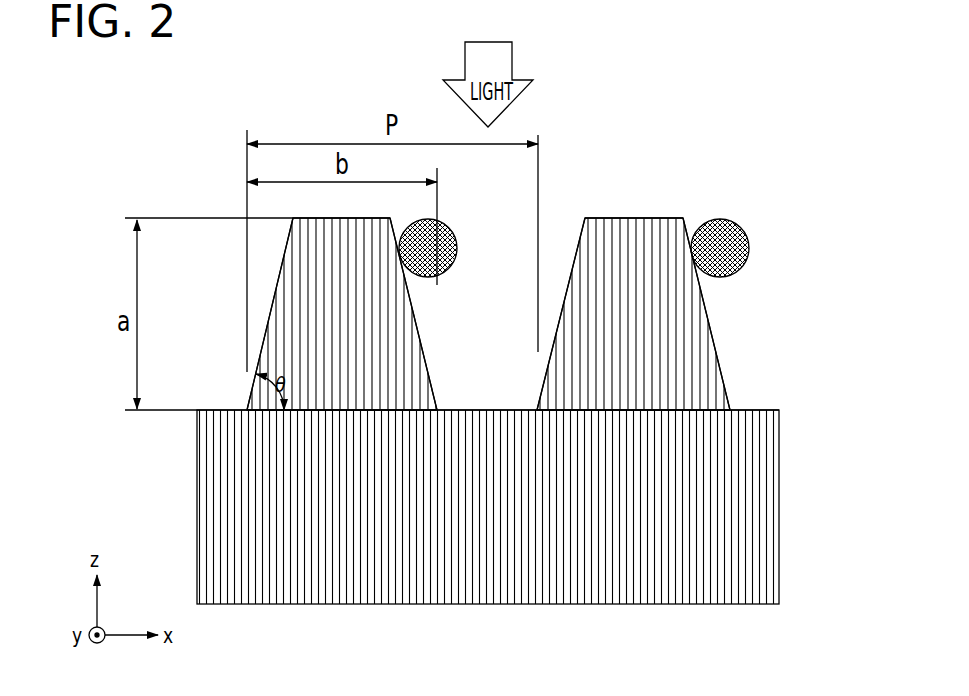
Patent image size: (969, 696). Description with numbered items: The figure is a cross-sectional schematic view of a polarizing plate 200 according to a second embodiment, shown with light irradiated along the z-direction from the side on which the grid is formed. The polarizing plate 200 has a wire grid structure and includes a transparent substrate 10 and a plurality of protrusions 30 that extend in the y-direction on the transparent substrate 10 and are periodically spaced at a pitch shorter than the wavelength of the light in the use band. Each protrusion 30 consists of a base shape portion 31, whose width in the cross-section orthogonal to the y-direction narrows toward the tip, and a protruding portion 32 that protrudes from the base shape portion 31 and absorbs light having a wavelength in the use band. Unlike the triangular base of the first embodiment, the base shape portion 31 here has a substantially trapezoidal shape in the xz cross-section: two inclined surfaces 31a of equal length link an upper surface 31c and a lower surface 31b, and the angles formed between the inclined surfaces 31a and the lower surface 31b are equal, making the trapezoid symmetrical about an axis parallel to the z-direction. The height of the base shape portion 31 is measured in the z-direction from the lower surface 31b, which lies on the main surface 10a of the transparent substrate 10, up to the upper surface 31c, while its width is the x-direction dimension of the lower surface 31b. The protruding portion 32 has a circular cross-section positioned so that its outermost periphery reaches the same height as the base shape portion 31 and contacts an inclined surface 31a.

The polarizing plate 200 is at (697, 118).
The transparent substrate 10 is at (523, 491).
The main surface 10a is at (753, 411).
The protrusion 30 is at (488, 277).
The base shape portion 31 is at (474, 329).
The inclined surface 31a is at (252, 392).
The lower surface 31b is at (345, 413).
The upper surface 31c is at (637, 218).
The protruding portion 32 is at (448, 268).